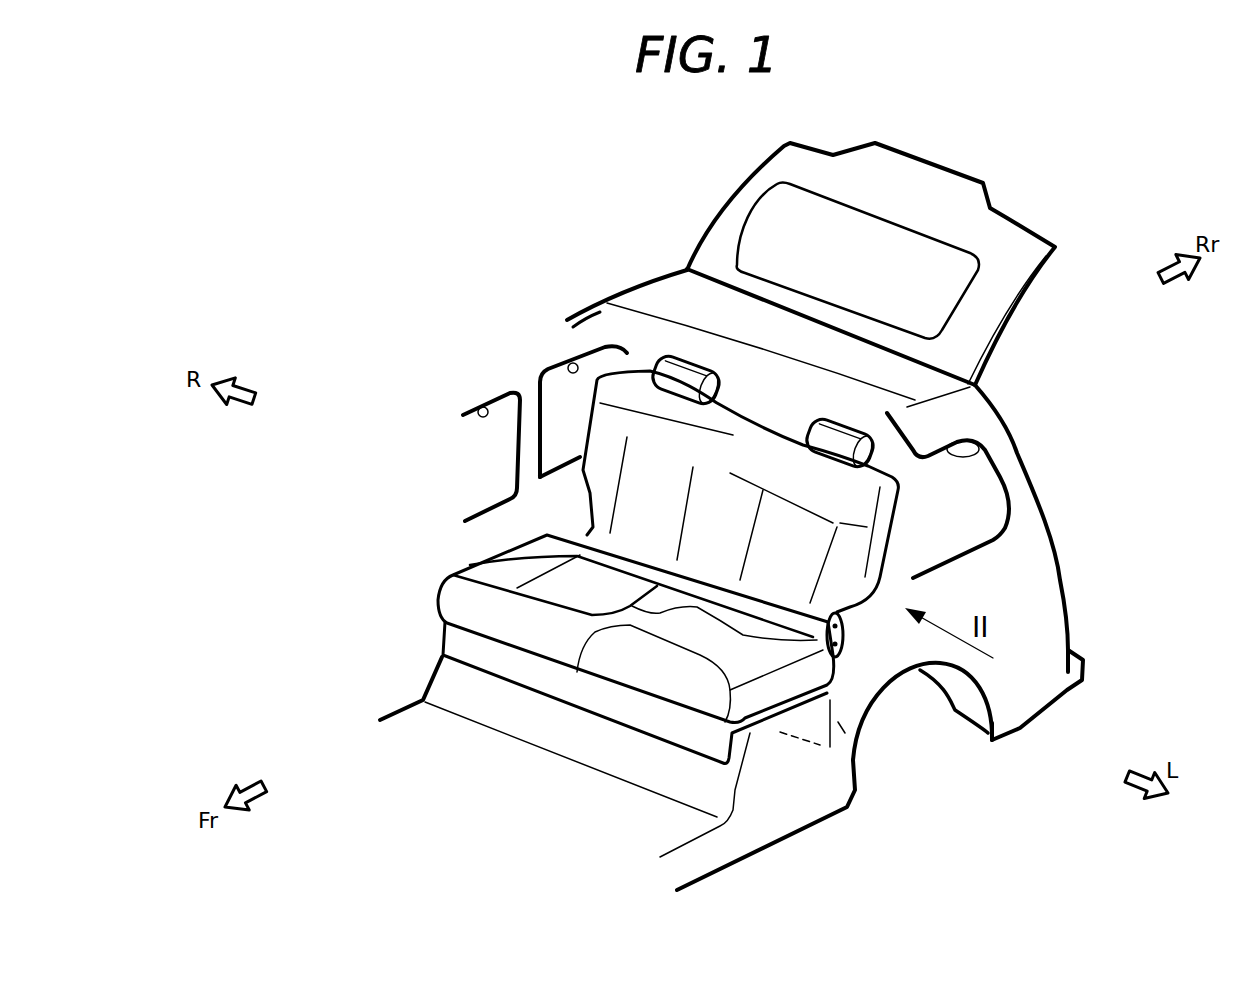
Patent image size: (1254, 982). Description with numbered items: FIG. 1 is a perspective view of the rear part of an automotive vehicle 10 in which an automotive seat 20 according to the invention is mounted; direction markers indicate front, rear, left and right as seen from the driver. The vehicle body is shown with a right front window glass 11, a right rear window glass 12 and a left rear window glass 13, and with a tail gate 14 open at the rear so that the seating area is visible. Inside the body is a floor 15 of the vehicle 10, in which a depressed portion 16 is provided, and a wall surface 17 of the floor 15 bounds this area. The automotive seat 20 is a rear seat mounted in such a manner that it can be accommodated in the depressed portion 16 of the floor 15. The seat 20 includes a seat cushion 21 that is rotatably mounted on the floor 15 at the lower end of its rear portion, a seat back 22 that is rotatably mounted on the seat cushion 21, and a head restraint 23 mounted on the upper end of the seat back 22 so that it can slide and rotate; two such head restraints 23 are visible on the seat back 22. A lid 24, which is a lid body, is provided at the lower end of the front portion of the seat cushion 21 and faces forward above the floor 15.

The automotive vehicle 10 is at (315, 252).
The right front window glass 11 is at (473, 408).
The right rear window glass 12 is at (570, 362).
The left rear window glass 13 is at (983, 450).
The tail gate 14 is at (1015, 227).
The floor 15 is at (640, 827).
The depressed portion 16 is at (843, 728).
The wall surface 17 is at (707, 785).
The automotive seat 20 is at (390, 555).
The seat cushion 21 is at (435, 602).
The seat back 22 is at (840, 524).
The head restraint 23 is at (695, 355).
The lid 24 is at (533, 703).